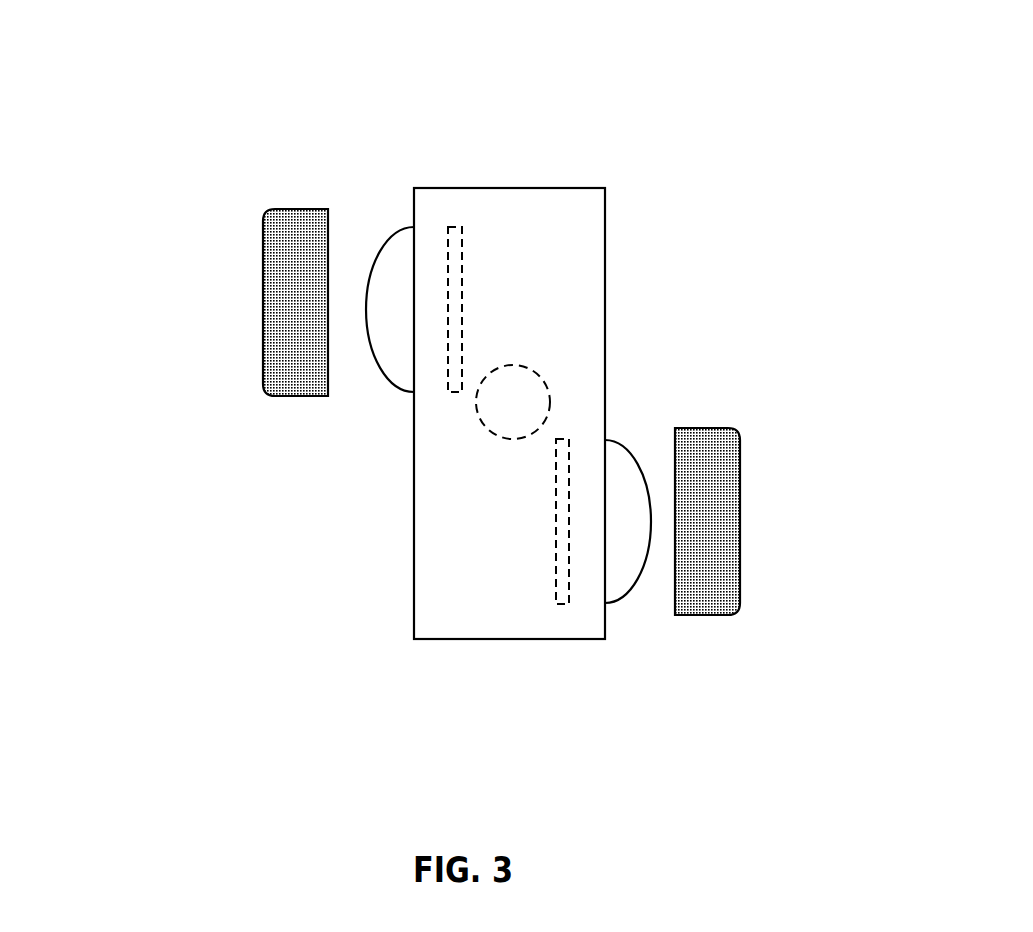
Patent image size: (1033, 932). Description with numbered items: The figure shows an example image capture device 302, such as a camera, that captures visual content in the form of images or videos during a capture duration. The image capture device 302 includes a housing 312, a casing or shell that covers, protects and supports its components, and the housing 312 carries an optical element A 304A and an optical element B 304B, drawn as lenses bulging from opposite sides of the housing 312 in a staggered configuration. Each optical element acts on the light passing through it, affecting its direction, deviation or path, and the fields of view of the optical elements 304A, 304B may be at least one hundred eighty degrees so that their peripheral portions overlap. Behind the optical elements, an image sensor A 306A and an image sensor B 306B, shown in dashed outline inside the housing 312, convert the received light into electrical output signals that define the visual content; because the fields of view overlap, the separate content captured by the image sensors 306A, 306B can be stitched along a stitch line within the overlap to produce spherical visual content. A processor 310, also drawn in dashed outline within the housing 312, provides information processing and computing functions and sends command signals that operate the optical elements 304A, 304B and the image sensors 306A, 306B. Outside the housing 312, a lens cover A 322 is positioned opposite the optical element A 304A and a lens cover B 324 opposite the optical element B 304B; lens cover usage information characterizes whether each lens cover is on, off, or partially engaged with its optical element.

The image capture device 302 is at (326, 147).
The optical element A 304A is at (381, 366).
The optical element B 304B is at (624, 447).
The image sensor A 306A is at (458, 226).
The image sensor B 306B is at (557, 605).
The processor 310 is at (513, 438).
The housing 312 is at (414, 640).
The lens cover A 322 is at (263, 266).
The lens cover B 324 is at (741, 523).